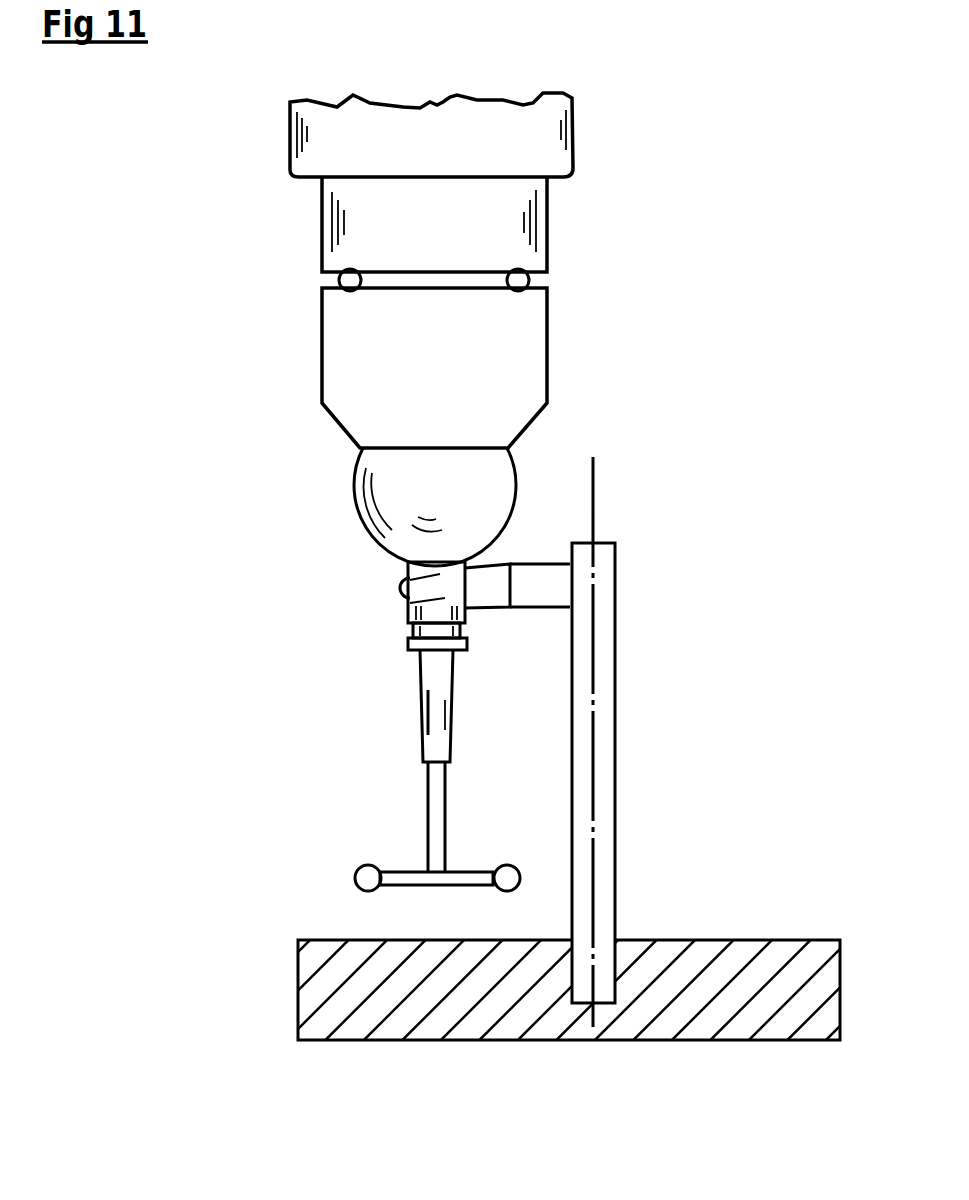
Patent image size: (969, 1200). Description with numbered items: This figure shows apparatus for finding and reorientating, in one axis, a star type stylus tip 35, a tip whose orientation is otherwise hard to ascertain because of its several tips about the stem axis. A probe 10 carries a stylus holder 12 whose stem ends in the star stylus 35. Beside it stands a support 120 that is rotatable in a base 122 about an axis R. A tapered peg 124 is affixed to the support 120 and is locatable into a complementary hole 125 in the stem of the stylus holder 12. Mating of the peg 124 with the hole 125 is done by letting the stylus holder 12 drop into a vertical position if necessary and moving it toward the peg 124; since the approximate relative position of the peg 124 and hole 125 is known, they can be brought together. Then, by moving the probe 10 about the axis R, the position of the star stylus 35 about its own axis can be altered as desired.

The probe 10 is at (432, 388).
The stylus holder 12 is at (317, 702).
The star type stylus tip 35 is at (392, 840).
The support 120 is at (615, 648).
The base 122 is at (725, 940).
The tapered peg 124 is at (527, 583).
The complementary hole 125 is at (403, 608).
The axis R is at (593, 815).